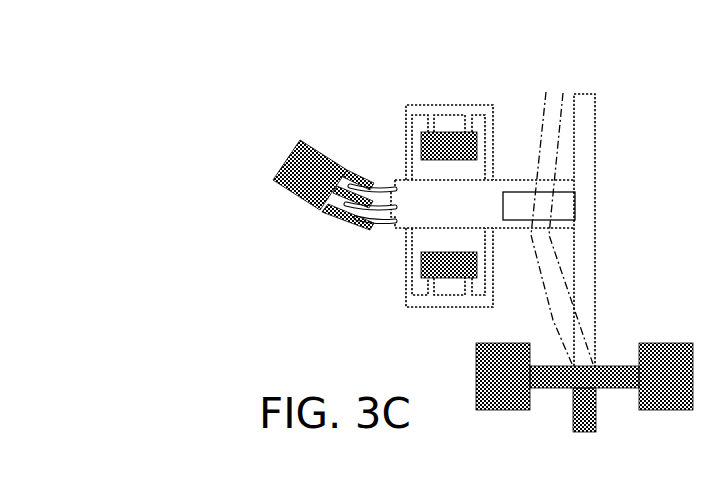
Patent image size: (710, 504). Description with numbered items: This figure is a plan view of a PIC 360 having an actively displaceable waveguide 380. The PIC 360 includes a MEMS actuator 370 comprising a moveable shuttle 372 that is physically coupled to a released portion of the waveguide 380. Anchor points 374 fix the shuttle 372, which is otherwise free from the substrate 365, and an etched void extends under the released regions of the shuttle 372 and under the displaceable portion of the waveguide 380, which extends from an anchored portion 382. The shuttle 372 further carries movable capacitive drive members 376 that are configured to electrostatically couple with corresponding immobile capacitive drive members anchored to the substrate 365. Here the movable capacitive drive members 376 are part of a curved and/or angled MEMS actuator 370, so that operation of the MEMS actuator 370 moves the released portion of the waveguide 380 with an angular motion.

The PIC 360 is at (277, 101).
The substrate 365 is at (679, 302).
The MEMS actuator 370 is at (550, 312).
The shuttle 372 is at (515, 244).
The anchor points 374 is at (467, 156).
The movable capacitive drive members 376 is at (369, 161).
The waveguide 380 is at (606, 134).
The anchored portion 382 is at (522, 388).